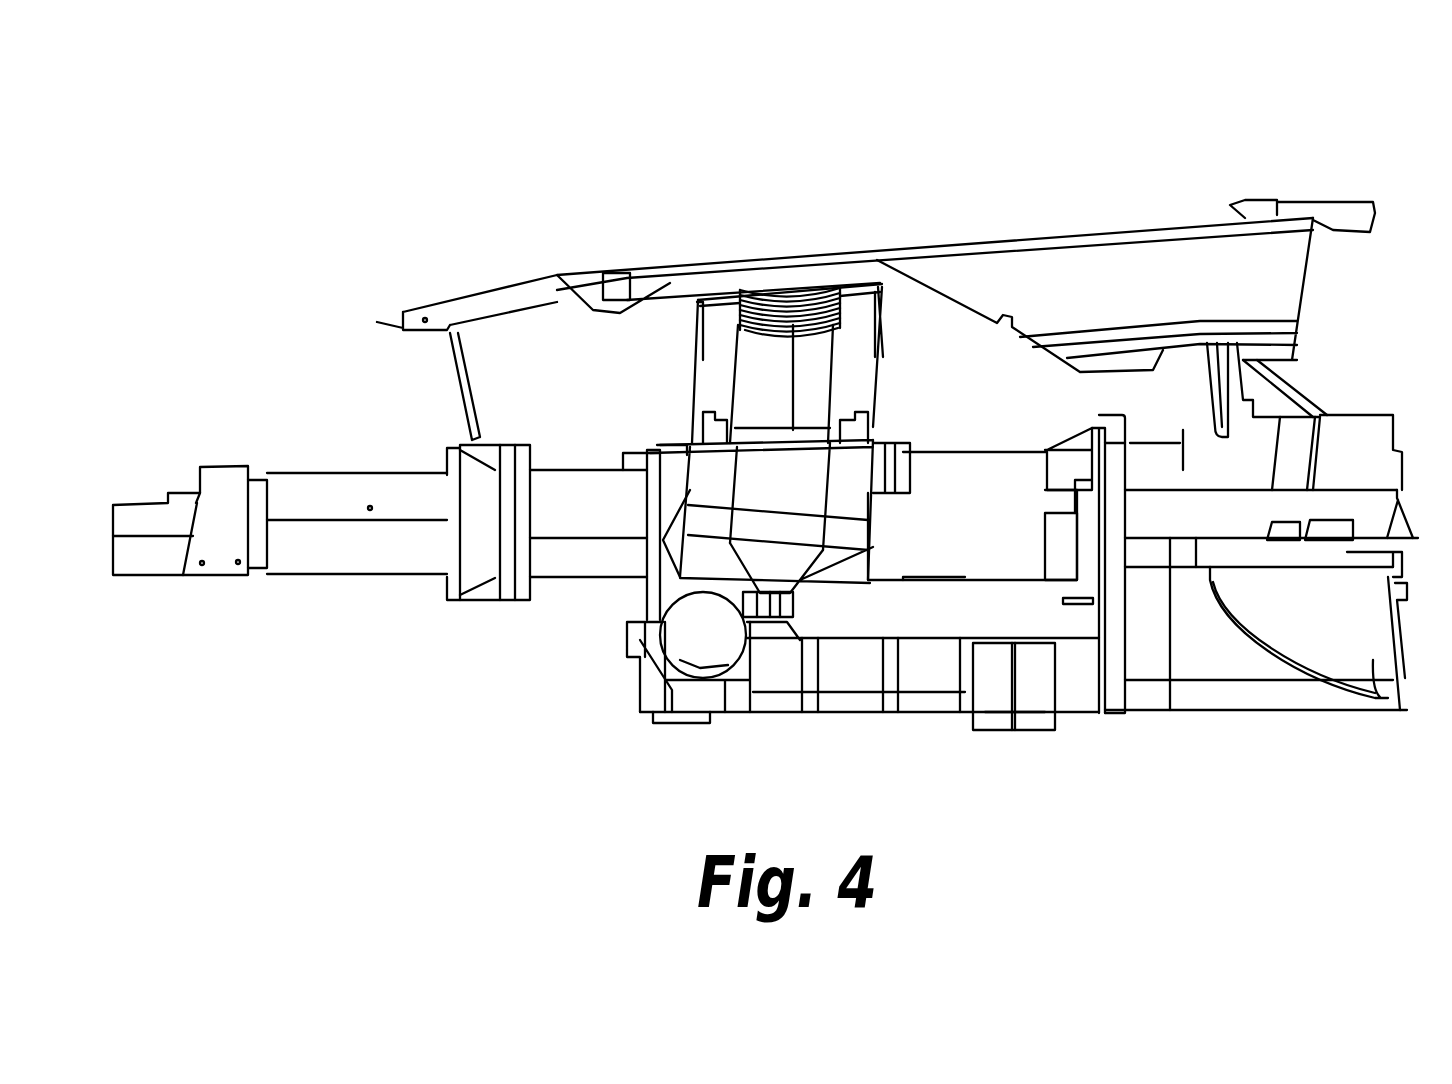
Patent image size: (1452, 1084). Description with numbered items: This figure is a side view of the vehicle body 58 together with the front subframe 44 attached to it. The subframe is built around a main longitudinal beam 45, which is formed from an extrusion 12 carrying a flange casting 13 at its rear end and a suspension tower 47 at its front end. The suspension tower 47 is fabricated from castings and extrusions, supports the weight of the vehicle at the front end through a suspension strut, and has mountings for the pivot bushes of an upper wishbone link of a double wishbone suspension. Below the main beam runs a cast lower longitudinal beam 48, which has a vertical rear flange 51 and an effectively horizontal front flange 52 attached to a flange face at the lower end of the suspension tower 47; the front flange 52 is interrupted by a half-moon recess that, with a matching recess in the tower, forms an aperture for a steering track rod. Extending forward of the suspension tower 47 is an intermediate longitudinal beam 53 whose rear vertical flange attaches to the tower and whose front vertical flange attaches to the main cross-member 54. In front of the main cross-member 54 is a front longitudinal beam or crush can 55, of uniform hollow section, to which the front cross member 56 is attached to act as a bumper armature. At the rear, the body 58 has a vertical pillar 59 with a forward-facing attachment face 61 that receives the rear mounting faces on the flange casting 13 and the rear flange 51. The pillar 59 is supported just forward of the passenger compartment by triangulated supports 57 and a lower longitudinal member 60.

The extrusion 12 is at (965, 580).
The flange casting 13 is at (1063, 563).
The front subframe 44 is at (636, 747).
The main longitudinal beam 45 is at (960, 455).
The suspension tower 47 is at (880, 387).
The lower longitudinal beam 48 is at (912, 713).
The vertical rear flange 51 is at (1097, 715).
The front flange 52 is at (627, 625).
The intermediate longitudinal beam 53 is at (556, 580).
The main cross-member 54 is at (460, 618).
The front longitudinal beam 55 is at (306, 575).
The front cross member 56 is at (140, 577).
The triangulated support 57 is at (1181, 465).
The body 58 is at (1334, 180).
The pillar 59 is at (1123, 713).
The lower longitudinal member 60 is at (1297, 705).
The attachment face 61 is at (1097, 610).